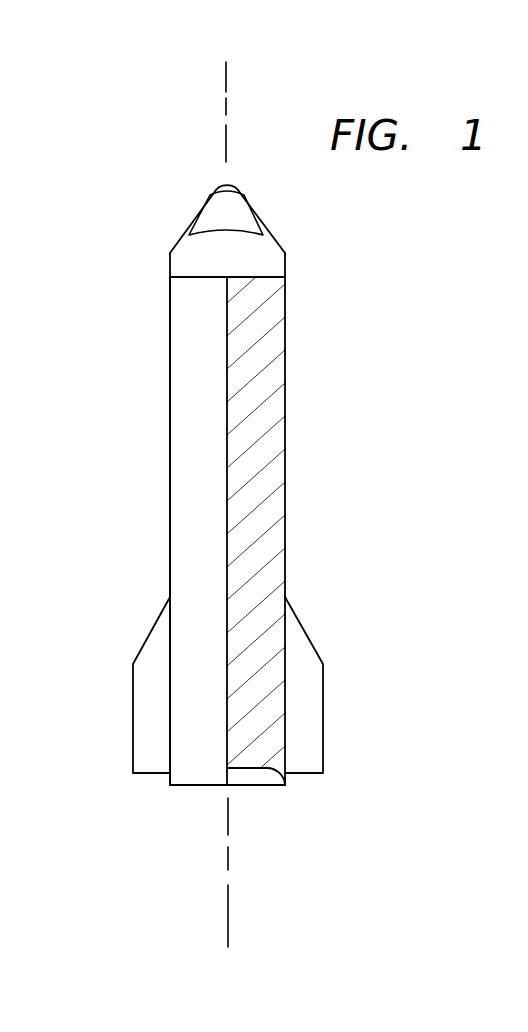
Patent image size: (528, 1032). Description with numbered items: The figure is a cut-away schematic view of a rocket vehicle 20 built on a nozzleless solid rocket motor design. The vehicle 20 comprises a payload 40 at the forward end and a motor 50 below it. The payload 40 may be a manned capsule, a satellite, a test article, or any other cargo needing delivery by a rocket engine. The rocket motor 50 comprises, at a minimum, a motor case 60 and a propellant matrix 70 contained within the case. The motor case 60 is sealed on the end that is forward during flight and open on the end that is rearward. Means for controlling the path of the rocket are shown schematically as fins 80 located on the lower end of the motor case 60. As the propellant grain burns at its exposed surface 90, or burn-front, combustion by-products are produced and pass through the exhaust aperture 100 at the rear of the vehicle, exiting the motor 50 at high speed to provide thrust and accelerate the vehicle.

The rocket vehicle 20 is at (412, 784).
The payload 40 is at (356, 178).
The motor 50 is at (353, 784).
The motor case 60 is at (190, 412).
The propellant matrix 70 is at (281, 524).
The fins 80 is at (157, 658).
The exposed surface 90 is at (245, 770).
The exhaust aperture 100 is at (198, 785).